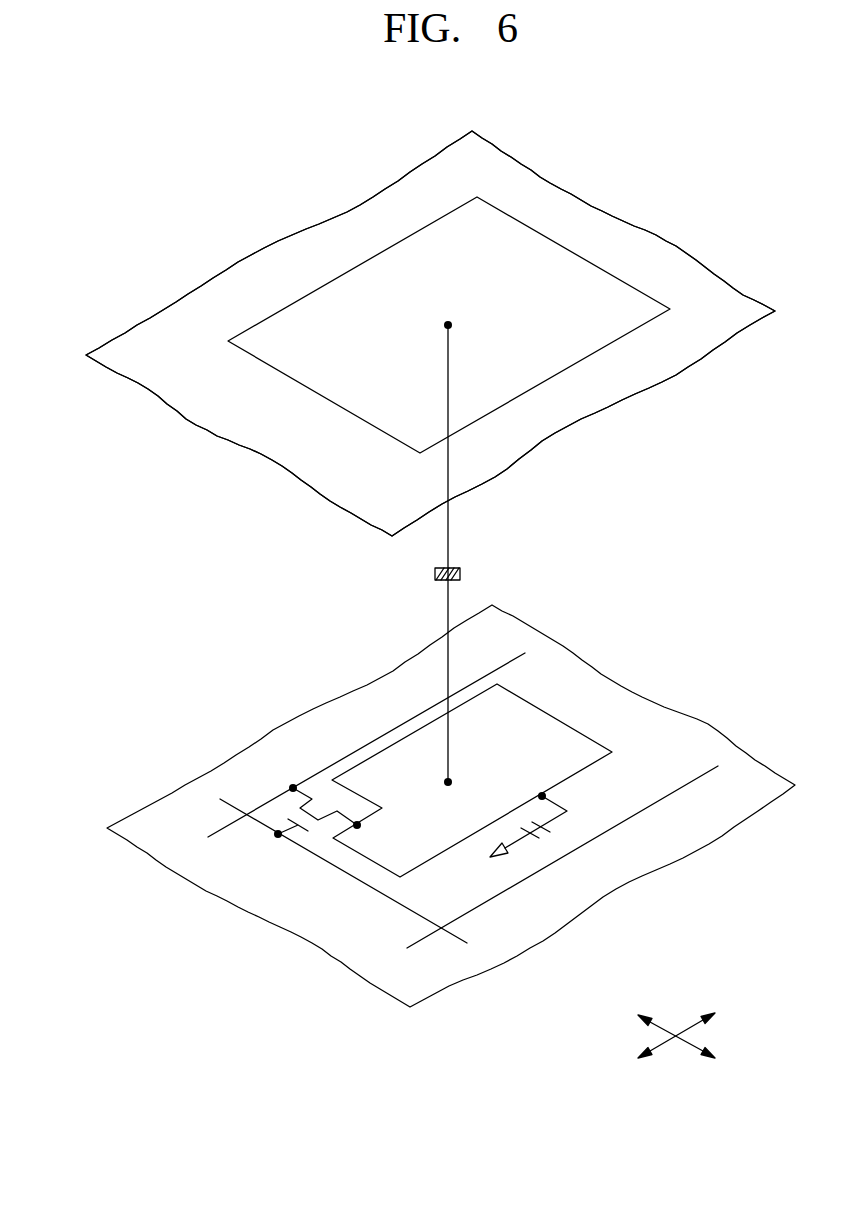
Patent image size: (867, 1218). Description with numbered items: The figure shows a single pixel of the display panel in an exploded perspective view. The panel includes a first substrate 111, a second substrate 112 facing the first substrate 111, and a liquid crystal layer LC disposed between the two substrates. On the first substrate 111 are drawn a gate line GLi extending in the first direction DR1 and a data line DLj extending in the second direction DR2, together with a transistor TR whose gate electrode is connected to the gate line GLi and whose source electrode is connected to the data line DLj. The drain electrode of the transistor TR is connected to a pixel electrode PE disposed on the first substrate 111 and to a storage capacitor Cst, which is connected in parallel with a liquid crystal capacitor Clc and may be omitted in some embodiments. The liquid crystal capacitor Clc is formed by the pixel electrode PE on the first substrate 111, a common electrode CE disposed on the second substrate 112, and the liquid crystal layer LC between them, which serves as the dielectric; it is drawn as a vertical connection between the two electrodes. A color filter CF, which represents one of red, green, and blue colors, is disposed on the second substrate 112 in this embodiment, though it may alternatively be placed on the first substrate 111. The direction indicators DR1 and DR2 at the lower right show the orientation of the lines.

The second substrate 112 is at (507, 474).
The common electrode CE is at (672, 365).
The color filter CF is at (548, 382).
The liquid crystal capacitor Clc is at (466, 553).
The liquid crystal layer LC is at (611, 571).
The first substrate 111 is at (602, 897).
The pixel electrode PE is at (555, 718).
The data line DLj is at (348, 750).
The gate line GLi is at (325, 866).
The transistor TR is at (305, 843).
The storage capacitor Cst is at (536, 824).
The first direction DR1 is at (699, 1042).
The second direction DR2 is at (699, 1031).